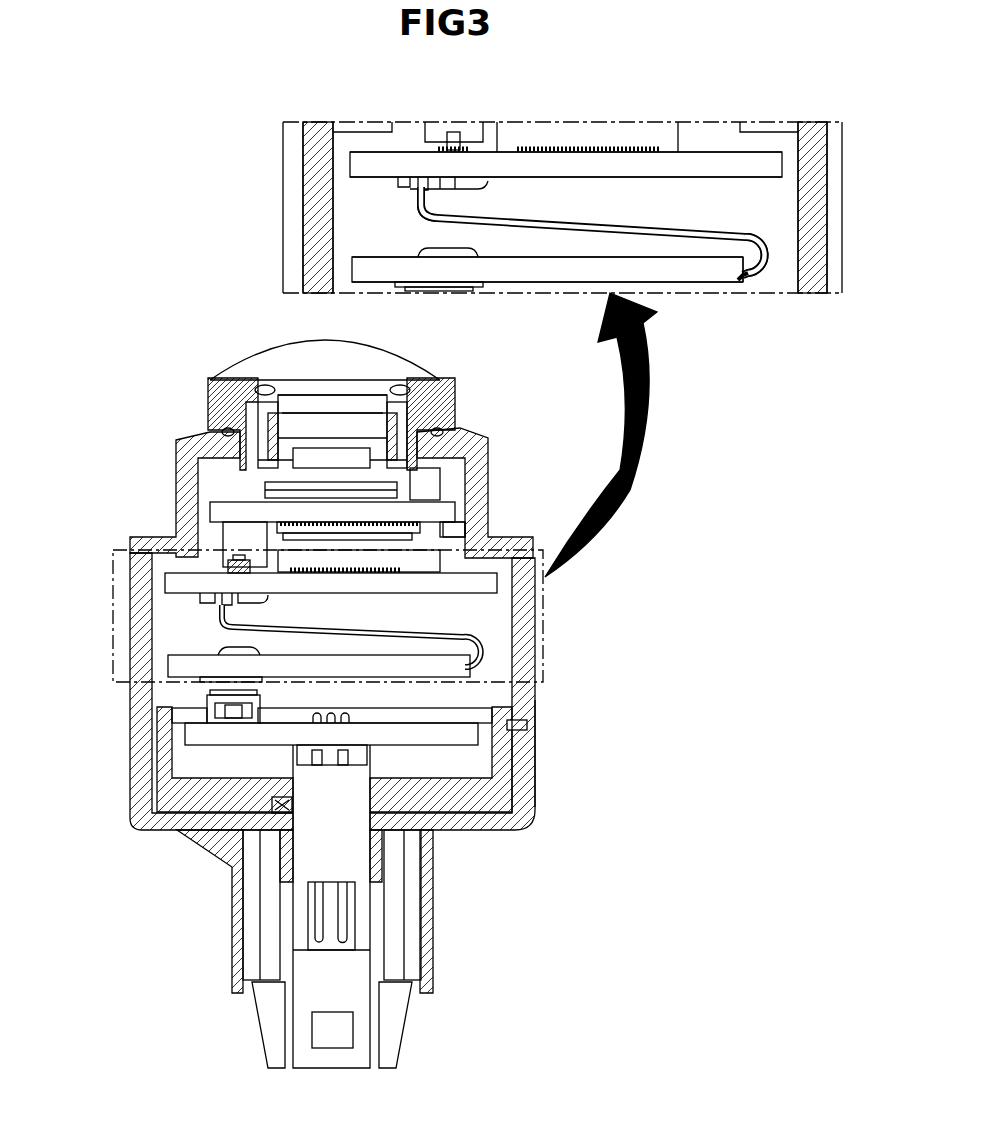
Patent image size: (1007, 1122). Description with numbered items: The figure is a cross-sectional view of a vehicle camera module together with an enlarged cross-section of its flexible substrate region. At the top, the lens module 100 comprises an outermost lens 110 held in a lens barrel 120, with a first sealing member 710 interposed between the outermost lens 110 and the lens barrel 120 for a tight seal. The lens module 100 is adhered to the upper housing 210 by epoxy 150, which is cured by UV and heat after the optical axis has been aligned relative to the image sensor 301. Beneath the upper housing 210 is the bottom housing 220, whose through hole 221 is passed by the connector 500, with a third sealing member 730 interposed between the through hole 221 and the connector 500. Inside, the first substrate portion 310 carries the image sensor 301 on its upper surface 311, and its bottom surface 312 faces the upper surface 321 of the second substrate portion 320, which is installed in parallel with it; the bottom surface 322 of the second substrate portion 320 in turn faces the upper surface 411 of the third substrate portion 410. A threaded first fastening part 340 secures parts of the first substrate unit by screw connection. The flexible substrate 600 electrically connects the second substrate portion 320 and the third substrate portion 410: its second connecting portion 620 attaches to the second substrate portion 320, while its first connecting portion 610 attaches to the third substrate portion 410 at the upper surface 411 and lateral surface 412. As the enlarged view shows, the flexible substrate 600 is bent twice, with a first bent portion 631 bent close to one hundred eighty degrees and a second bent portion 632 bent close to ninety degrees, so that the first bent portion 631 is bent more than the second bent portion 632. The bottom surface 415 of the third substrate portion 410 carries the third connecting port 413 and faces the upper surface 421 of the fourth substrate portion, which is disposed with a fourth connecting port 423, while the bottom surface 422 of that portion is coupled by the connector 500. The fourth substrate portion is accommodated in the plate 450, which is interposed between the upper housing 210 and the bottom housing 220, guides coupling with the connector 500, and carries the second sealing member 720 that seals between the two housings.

The lens module 100 is at (450, 378).
The outermost lens 110 is at (278, 360).
The lens barrel 120 is at (452, 403).
The epoxy 150 is at (222, 430).
The upper housing 210 is at (483, 445).
The bottom housing 220 is at (540, 815).
The through hole 221 is at (320, 975).
The image sensor 301 is at (268, 485).
The first substrate portion 310 is at (215, 516).
The upper surface 311 is at (447, 500).
The bottom surface 312 is at (463, 523).
The second substrate portion 320 is at (378, 160).
The upper surface 321 is at (693, 152).
The bottom surface 322 is at (665, 177).
The first fastening part 340 is at (185, 740).
The third substrate portion 410 is at (400, 265).
The upper surface 411 is at (360, 252).
The lateral surface 412 is at (745, 293).
The third connecting port 413 is at (210, 694).
The bottom surface 415 is at (667, 283).
The upper surface 421 is at (453, 722).
The bottom surface 422 is at (457, 746).
The fourth connecting port 423 is at (205, 712).
The plate 450 is at (533, 743).
The connector 500 is at (347, 857).
The flexible substrate 600 is at (555, 213).
The first connecting portion 610 is at (748, 272).
The second connecting portion 620 is at (365, 188).
The first bent portion 631 is at (757, 252).
The second bent portion 632 is at (420, 218).
The first sealing member 710 is at (262, 388).
The second sealing member 720 is at (528, 724).
The third sealing member 730 is at (280, 806).